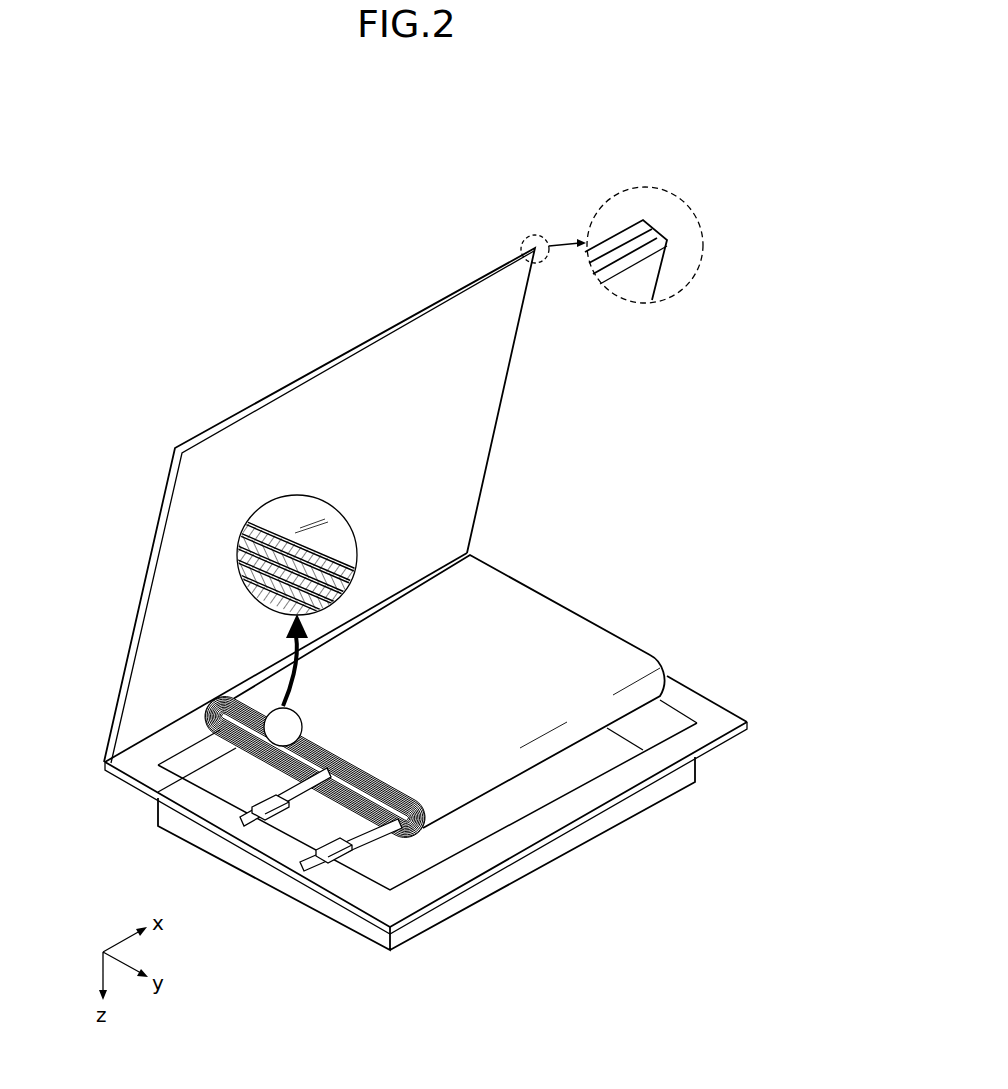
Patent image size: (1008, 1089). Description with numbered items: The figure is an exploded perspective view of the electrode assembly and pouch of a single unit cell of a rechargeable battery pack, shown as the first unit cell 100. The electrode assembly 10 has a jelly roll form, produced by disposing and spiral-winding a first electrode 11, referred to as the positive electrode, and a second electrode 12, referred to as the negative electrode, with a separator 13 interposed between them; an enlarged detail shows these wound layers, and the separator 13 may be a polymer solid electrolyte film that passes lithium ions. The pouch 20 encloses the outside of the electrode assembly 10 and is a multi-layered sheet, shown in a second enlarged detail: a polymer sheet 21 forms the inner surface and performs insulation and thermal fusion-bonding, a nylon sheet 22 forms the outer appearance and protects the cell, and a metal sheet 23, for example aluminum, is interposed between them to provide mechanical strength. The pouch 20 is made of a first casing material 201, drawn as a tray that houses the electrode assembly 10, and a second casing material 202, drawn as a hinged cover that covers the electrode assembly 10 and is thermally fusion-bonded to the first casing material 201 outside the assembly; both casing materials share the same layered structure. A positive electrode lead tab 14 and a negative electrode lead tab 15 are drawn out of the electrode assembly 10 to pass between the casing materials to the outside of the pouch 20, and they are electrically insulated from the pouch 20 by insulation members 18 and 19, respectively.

The first unit cell 100 is at (308, 283).
The electrode assembly 10 is at (413, 746).
The first electrode 11 is at (241, 549).
The second electrode 12 is at (248, 522).
The separator 13 is at (345, 560).
The positive electrode lead tab 14 is at (232, 838).
The negative electrode lead tab 15 is at (312, 856).
The insulation member 18 is at (270, 812).
The insulation member 19 is at (345, 851).
The pouch 20 is at (612, 207).
The polymer sheet 21 is at (650, 230).
The nylon sheet 22 is at (611, 242).
The metal sheet 23 is at (630, 240).
The first casing material 201 is at (527, 850).
The second casing material 202 is at (152, 561).